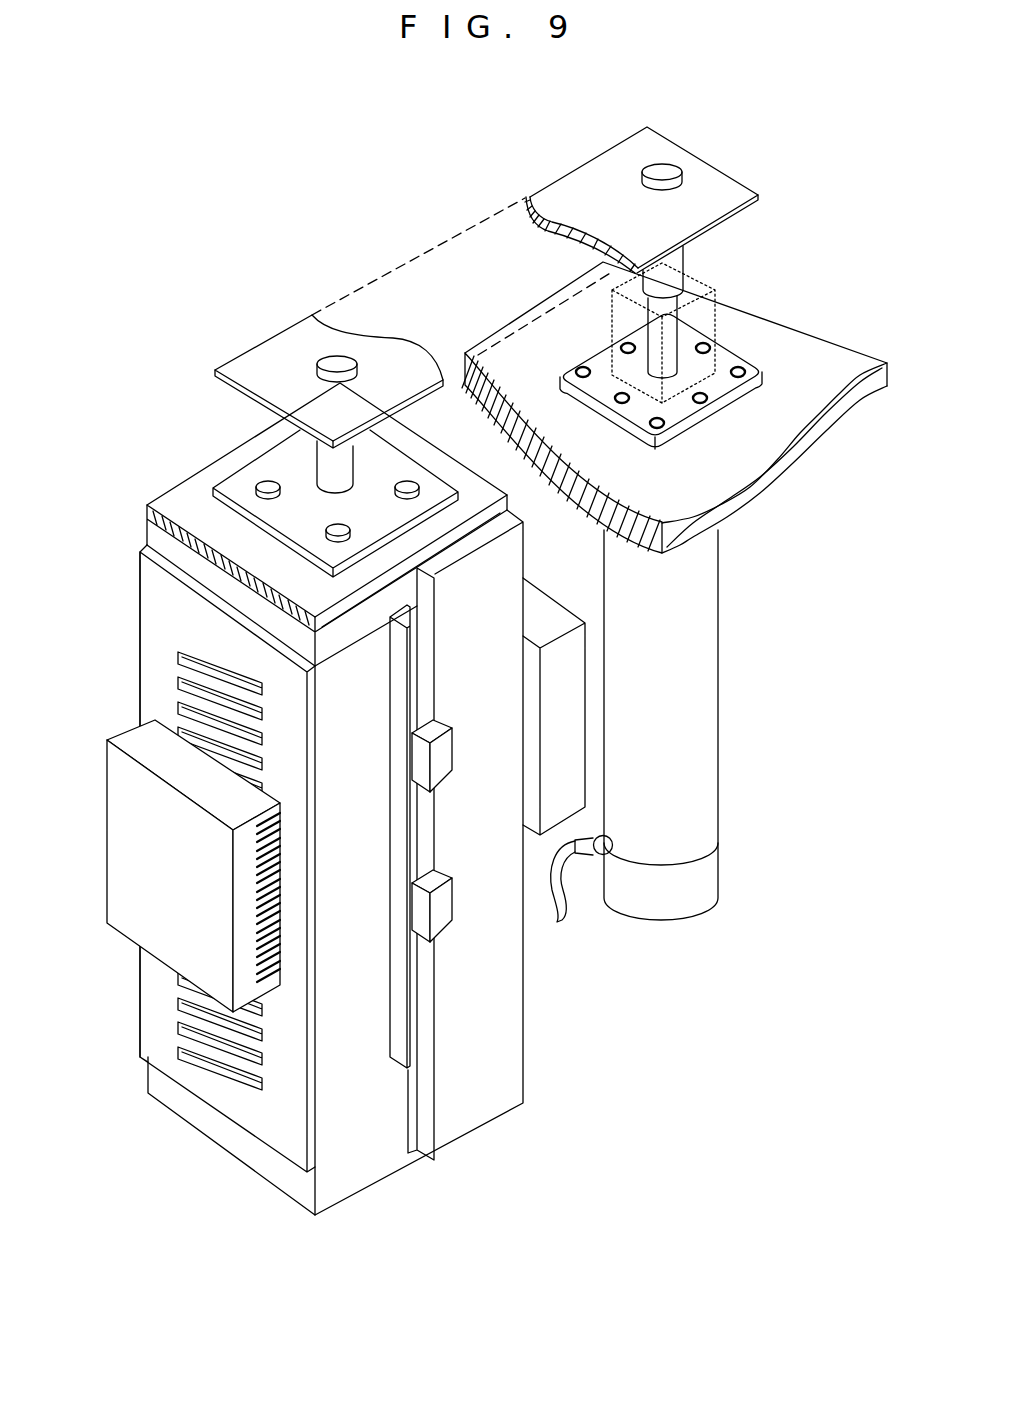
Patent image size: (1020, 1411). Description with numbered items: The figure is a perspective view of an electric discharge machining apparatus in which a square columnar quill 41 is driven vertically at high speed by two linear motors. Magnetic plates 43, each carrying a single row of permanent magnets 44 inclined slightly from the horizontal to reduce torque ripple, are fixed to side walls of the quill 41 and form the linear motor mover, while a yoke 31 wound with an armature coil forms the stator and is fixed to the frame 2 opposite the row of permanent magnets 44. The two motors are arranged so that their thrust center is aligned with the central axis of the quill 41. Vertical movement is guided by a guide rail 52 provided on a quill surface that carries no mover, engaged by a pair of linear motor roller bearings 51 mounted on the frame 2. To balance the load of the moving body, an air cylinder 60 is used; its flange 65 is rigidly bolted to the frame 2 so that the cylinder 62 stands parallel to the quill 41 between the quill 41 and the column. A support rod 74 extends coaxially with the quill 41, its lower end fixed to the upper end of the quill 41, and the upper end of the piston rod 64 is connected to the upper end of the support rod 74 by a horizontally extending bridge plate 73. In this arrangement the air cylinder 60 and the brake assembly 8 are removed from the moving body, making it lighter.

The frame 2 is at (840, 340).
The brake assembly 8 is at (708, 310).
The yoke 31 is at (124, 740).
The quill 41 is at (398, 1155).
The magnetic plate 43 is at (138, 1060).
The permanent magnets 44 is at (178, 1025).
The linear motor roller bearings 51 is at (432, 912).
The guide rail 52 is at (418, 1030).
The air cylinder 60 is at (733, 598).
The cylinder 62 is at (718, 777).
The piston rod 64 is at (688, 293).
The flange 65 is at (730, 357).
The bridge plate 73 is at (590, 160).
The support rod 74 is at (320, 470).